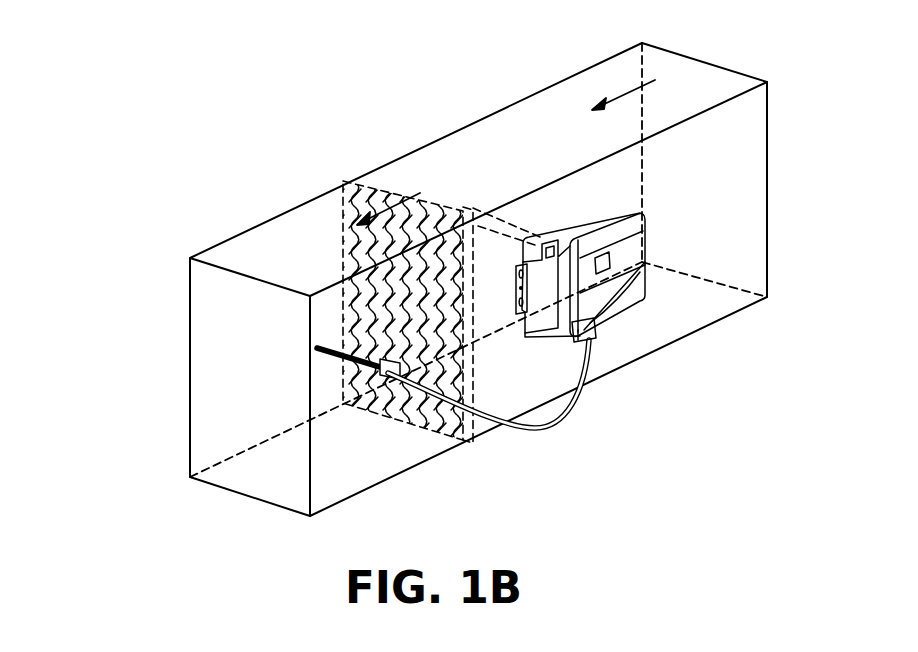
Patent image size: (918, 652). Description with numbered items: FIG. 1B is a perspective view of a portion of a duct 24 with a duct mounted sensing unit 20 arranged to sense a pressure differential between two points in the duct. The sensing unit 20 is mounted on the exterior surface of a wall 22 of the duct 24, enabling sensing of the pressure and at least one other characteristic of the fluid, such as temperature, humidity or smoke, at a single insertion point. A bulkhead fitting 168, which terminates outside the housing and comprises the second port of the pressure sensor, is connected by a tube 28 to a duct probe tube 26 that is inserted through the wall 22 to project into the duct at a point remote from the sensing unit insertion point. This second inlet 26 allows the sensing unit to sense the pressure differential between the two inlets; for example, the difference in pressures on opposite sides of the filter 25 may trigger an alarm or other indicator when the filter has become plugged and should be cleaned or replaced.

The sensing unit 20 is at (650, 277).
The wall 22 is at (380, 437).
The duct 24 is at (668, 413).
The filter 25 is at (350, 228).
The duct probe tube 26 is at (335, 347).
The tube 28 is at (562, 427).
The bulkhead fitting 168 is at (598, 338).